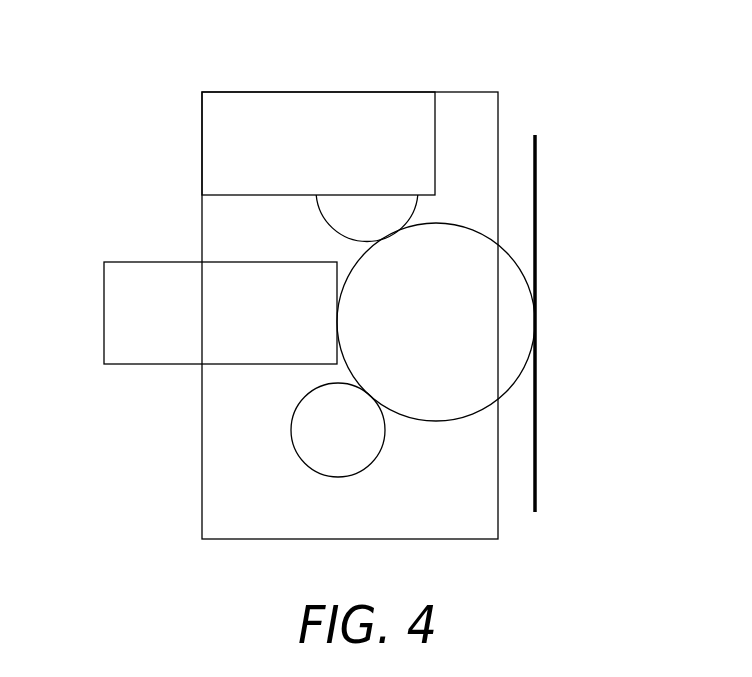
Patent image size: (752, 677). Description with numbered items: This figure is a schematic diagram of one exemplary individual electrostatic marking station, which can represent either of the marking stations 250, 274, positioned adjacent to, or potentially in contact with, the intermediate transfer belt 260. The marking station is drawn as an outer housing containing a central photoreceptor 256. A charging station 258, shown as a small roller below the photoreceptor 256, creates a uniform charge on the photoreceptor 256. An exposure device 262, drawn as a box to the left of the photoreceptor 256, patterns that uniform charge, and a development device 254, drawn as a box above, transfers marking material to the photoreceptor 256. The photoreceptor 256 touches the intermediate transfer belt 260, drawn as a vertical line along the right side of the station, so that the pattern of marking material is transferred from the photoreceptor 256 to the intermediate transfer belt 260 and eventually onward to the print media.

The marking station 250 is at (202, 143).
The marking station 274 is at (295, 315).
The development device 254 is at (400, 92).
The photoreceptor 256 is at (437, 422).
The charging station 258 is at (299, 457).
The intermediate transfer belt 260 is at (557, 288).
The exposure device 262 is at (103, 312).